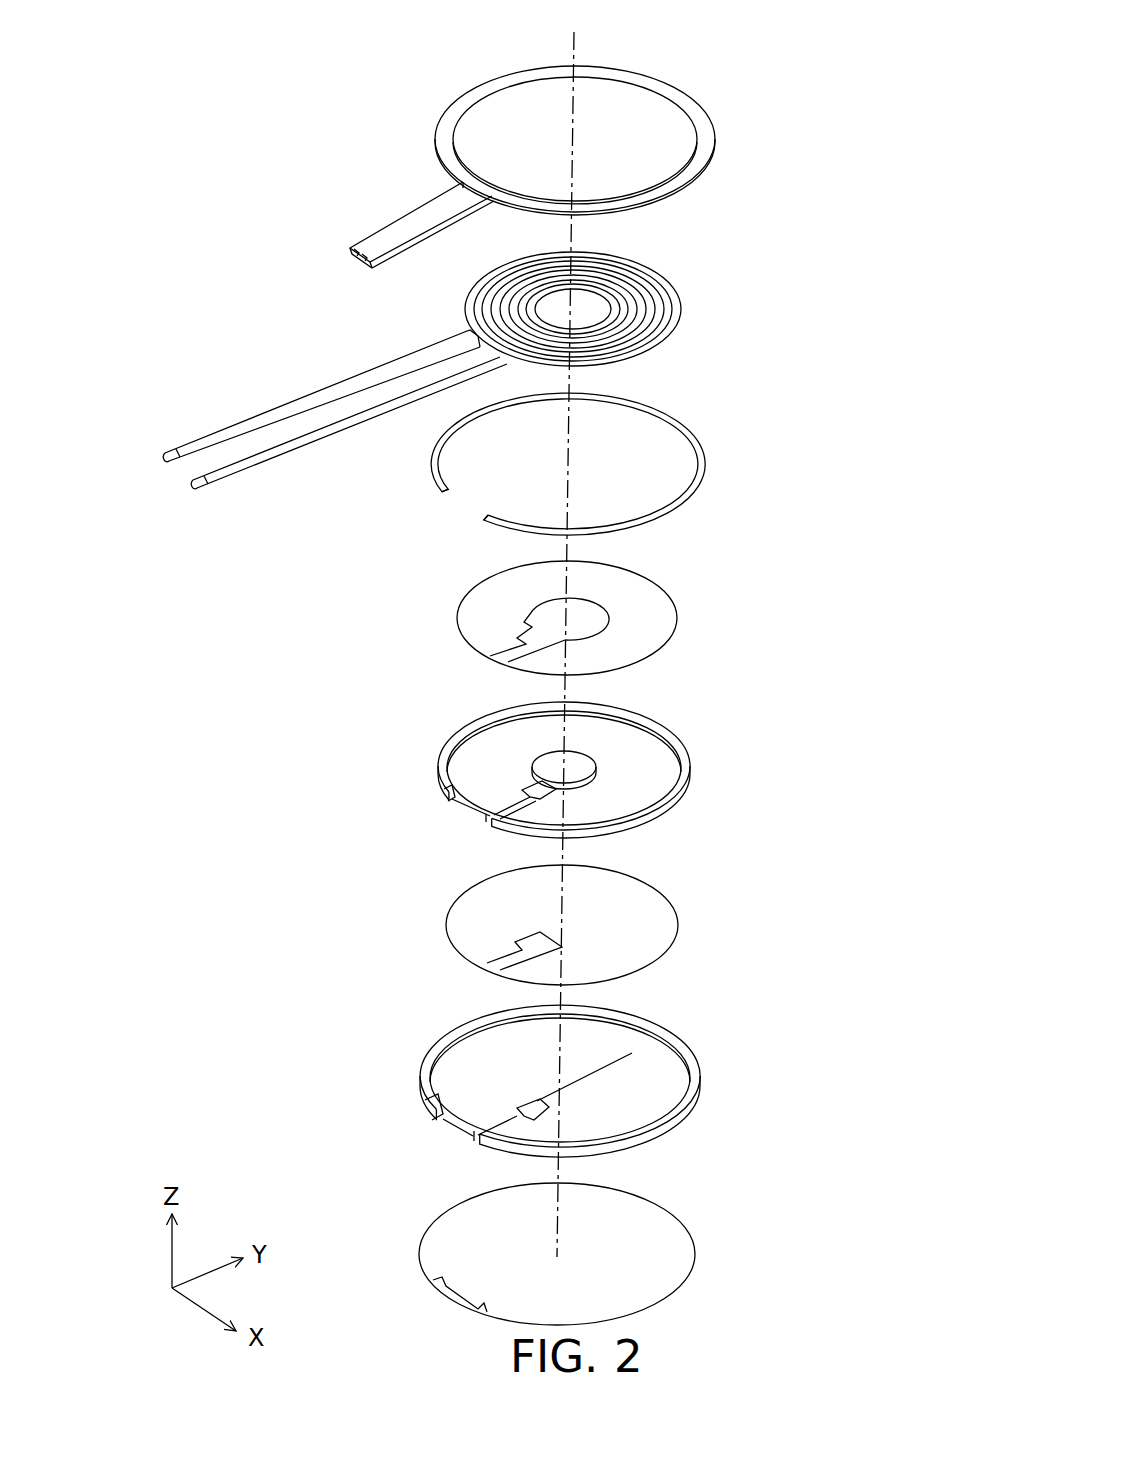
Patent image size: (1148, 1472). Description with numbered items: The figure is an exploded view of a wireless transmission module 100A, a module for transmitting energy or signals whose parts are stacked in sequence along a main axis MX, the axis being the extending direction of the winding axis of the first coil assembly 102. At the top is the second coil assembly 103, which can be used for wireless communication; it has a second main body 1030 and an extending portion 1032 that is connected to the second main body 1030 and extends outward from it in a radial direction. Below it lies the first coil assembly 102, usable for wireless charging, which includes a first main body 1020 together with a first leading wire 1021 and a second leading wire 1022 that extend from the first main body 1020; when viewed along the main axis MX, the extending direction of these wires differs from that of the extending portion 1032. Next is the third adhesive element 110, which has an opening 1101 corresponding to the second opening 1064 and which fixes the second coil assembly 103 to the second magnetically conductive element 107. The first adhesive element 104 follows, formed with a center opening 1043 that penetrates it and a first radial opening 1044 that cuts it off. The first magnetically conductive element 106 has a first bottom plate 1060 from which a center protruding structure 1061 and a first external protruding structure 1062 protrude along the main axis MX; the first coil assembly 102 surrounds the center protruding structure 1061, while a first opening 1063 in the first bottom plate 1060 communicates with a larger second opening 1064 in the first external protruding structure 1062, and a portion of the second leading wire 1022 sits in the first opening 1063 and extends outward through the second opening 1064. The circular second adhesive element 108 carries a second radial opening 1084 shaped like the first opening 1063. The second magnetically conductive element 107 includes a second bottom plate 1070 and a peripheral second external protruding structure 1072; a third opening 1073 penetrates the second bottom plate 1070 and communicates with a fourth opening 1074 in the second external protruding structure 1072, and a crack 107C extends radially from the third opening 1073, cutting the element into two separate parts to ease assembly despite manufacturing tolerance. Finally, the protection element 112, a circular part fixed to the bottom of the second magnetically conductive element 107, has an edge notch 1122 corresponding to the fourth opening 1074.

The wireless transmission module 100A is at (263, 45).
The main axis MX is at (573, 628).
The second coil assembly 103 is at (738, 140).
The second main body 1030 is at (475, 95).
The extending portion 1032 is at (405, 218).
The first coil assembly 102 is at (707, 310).
The first main body 1020 is at (665, 278).
The first leading wire 1021 is at (303, 400).
The second leading wire 1022 is at (260, 460).
The third adhesive element 110 is at (727, 468).
The opening 1101 is at (462, 512).
The first adhesive element 104 is at (708, 614).
The center opening 1043 is at (545, 614).
The first radial opening 1044 is at (512, 656).
The first magnetically conductive element 106 is at (727, 771).
The first bottom plate 1060 is at (465, 777).
The center protruding structure 1061 is at (578, 762).
The first external protruding structure 1062 is at (445, 753).
The first opening 1063 is at (529, 808).
The second opening 1064 is at (463, 818).
The second adhesive element 108 is at (707, 928).
The second radial opening 1084 is at (497, 968).
The second magnetically conductive element 107 is at (723, 1088).
The second bottom plate 1070 is at (447, 1090).
The second external protruding structure 1072 is at (425, 1070).
The crack 107C is at (632, 1053).
The third opening 1073 is at (512, 1125).
The fourth opening 1074 is at (445, 1128).
The protection element 112 is at (722, 1256).
The edge notch 1122 is at (455, 1298).